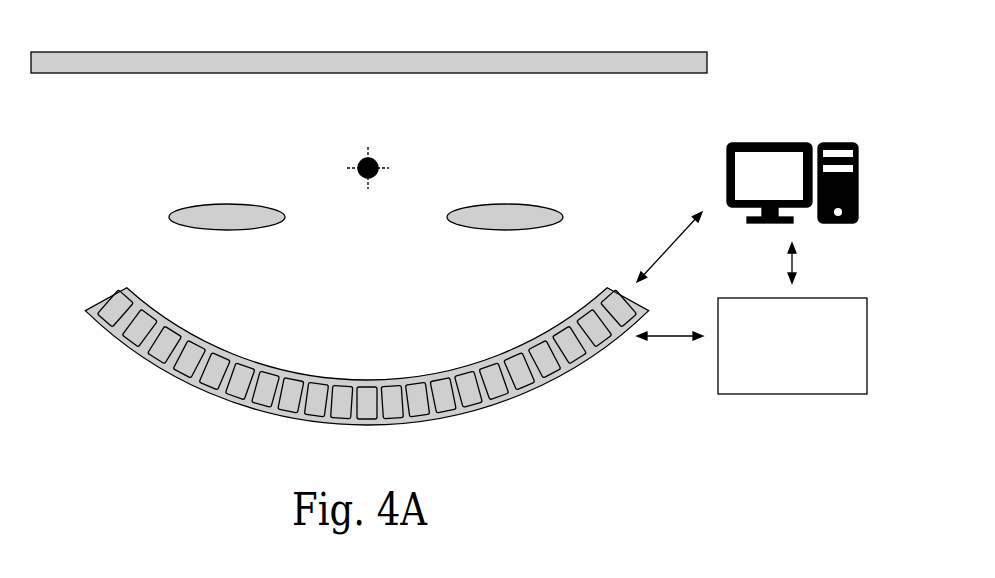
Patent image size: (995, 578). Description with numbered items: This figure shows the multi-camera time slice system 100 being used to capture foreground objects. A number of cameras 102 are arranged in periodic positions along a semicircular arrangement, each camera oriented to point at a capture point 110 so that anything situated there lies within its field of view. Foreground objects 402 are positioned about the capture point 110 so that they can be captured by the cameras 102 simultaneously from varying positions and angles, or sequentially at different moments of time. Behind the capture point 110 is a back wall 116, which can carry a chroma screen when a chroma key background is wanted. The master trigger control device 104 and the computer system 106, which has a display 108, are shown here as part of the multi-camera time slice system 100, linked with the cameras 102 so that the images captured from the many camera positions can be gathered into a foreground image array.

The multi-camera time slice system 100 is at (782, 62).
The cameras 102 is at (115, 312).
The master trigger control device 104 is at (780, 394).
The computer system 106 is at (837, 143).
The display 108 is at (757, 143).
The capture point 110 is at (357, 164).
The back wall 116 is at (212, 73).
The foreground objects 402 is at (201, 204).